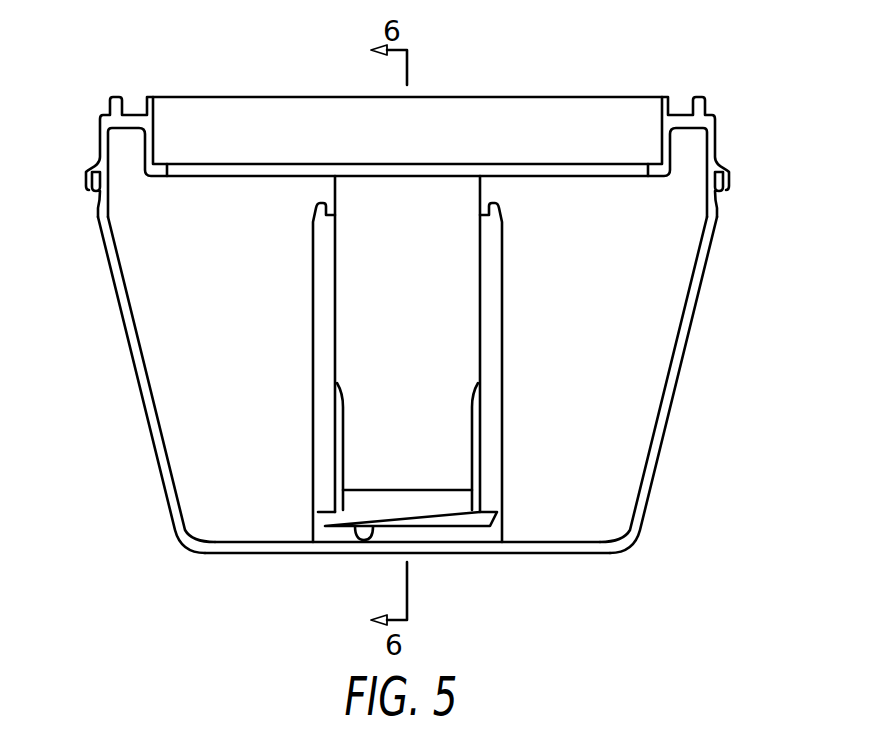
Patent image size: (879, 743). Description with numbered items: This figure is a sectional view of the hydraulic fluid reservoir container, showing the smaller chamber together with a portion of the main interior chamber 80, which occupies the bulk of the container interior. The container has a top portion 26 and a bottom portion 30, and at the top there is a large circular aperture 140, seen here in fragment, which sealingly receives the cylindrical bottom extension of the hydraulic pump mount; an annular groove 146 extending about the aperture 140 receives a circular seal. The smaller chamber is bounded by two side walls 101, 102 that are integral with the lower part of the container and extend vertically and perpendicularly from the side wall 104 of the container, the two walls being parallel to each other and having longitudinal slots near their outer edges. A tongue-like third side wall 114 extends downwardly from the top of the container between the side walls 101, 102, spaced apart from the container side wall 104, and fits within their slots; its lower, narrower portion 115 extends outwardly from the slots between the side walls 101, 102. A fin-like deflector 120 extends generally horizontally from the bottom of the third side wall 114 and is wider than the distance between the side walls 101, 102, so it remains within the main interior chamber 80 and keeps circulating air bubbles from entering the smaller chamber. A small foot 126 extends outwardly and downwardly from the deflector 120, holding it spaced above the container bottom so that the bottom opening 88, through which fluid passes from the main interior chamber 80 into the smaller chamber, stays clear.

The top portion 26 is at (710, 135).
The bottom portion 30 is at (675, 375).
The main interior chamber 80 is at (433, 326).
The bottom opening 88 is at (440, 533).
The side wall 101 is at (325, 408).
The side wall 102 is at (490, 410).
The side wall of the container 104 is at (212, 438).
The third side wall 114 is at (433, 343).
The lower, narrower portion 115 is at (476, 465).
The fin-like deflector 120 is at (372, 503).
The small foot 126 is at (376, 535).
The large circular aperture 140 is at (537, 130).
The annular groove 146 is at (680, 101).